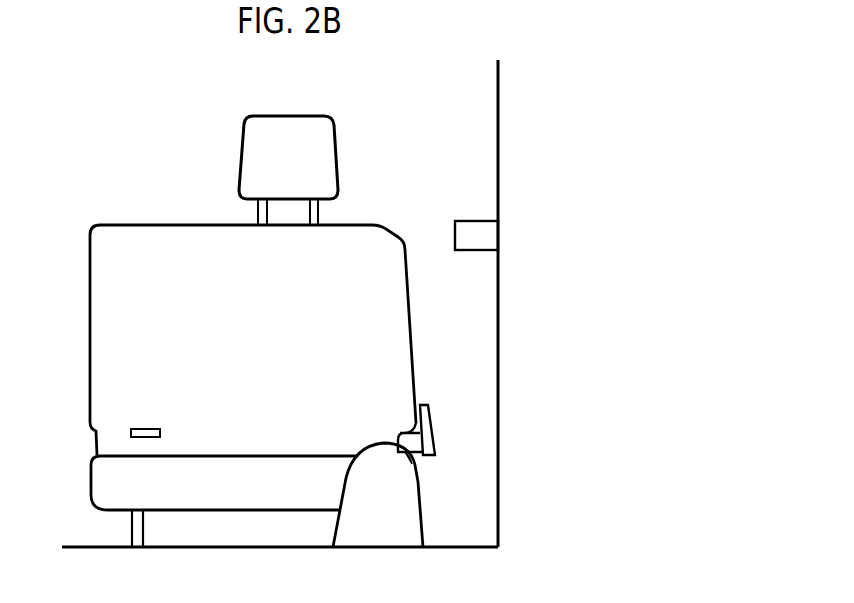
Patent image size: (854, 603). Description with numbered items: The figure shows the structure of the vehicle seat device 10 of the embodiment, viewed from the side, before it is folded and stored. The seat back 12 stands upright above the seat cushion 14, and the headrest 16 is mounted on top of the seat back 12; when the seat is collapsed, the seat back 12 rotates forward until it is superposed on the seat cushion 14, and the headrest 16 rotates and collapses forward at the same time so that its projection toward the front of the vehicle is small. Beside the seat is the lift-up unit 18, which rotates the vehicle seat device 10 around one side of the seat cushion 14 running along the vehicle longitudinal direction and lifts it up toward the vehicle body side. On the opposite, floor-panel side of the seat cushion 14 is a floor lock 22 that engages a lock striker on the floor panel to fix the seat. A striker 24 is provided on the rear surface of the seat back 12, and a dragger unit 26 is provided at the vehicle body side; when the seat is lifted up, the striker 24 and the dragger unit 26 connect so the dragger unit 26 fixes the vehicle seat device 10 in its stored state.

The vehicle seat device 10 is at (197, 132).
The seat back 12 is at (153, 225).
The seat cushion 14 is at (263, 498).
The headrest 16 is at (337, 145).
The lift-up unit 18 is at (403, 522).
The floor lock 22 is at (145, 532).
The striker 24 is at (150, 428).
The dragger unit 26 is at (462, 222).